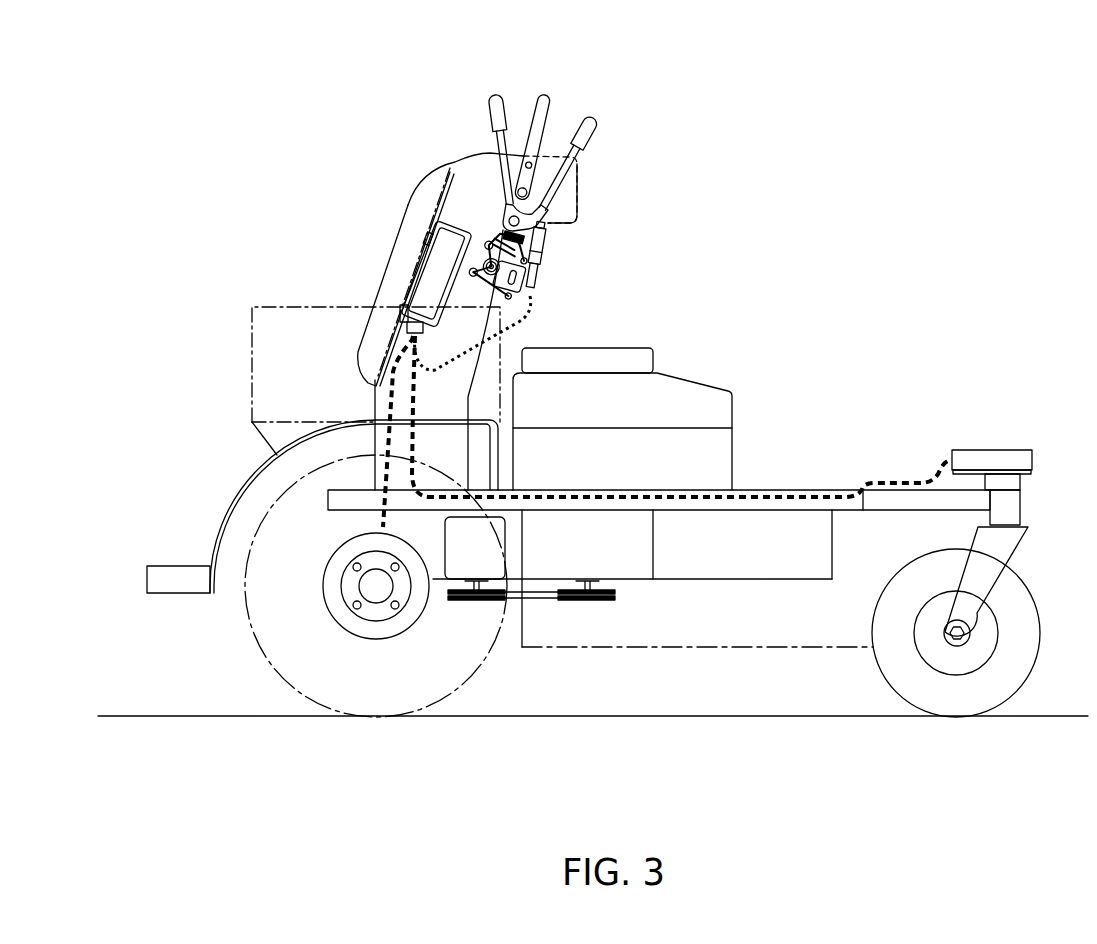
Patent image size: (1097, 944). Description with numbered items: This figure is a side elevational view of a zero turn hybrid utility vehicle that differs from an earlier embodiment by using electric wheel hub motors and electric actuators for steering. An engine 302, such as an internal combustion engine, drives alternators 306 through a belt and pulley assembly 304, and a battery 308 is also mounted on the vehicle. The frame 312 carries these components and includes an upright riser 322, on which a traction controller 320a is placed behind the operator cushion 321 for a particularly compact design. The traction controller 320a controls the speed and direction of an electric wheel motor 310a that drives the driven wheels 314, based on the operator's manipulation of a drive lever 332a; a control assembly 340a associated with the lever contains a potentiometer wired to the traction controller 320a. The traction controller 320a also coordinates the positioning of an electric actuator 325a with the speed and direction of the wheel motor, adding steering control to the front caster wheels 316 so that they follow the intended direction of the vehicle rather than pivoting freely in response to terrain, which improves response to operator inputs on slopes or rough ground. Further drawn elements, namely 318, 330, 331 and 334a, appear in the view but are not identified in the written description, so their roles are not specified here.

The engine 302 is at (637, 469).
The belt and pulley assembly 304 is at (540, 598).
The alternators 306 is at (507, 533).
The battery 308 is at (278, 307).
The electric wheel motor 310a is at (418, 627).
The frame 312 is at (800, 489).
The driven wheels 314 is at (273, 670).
The front caster wheels 316 is at (890, 678).
The chassis 318 is at (673, 649).
The traction controller 320a is at (435, 277).
The operator cushion 321 is at (412, 203).
The upright riser 322 is at (482, 154).
The electric actuator 325a is at (1005, 450).
The bumper 330 is at (188, 566).
The control lever 331 is at (549, 98).
The drive lever 332a is at (488, 92).
The damper 334a is at (549, 250).
The control assembly 340a is at (484, 214).